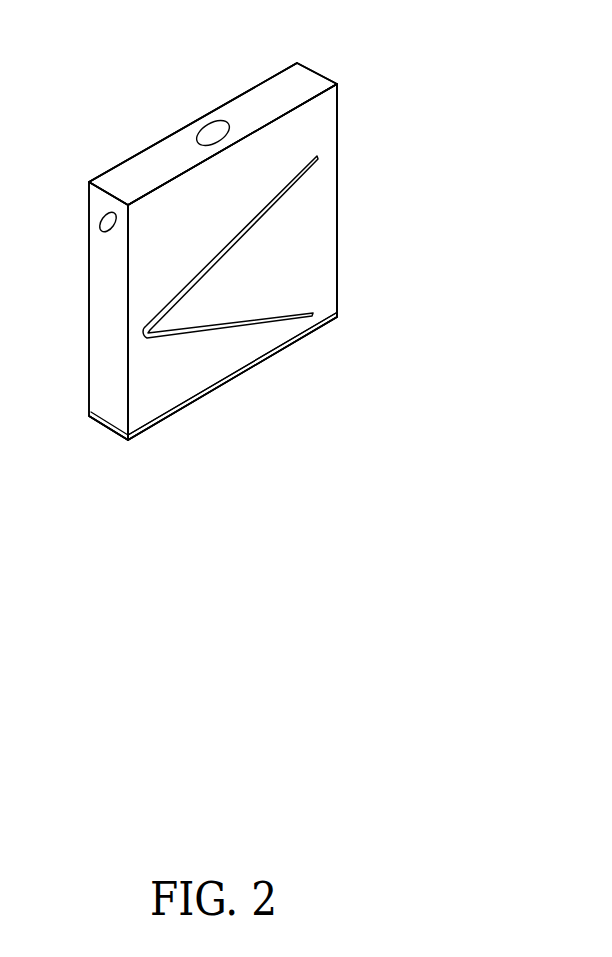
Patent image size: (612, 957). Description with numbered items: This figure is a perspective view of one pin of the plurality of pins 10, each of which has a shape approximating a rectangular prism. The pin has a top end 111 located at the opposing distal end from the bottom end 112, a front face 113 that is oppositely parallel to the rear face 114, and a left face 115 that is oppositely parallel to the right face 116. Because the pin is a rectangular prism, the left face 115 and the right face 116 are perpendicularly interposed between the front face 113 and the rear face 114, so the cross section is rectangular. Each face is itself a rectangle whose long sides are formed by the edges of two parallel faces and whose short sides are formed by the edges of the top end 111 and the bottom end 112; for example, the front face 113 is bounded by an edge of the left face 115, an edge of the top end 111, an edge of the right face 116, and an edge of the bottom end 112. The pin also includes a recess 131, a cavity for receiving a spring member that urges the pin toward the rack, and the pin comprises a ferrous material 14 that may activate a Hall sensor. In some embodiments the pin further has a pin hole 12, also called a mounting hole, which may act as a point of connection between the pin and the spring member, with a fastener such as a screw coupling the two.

The plurality of pins 10 is at (466, 243).
The top end 111 is at (303, 77).
The bottom end 112 is at (222, 388).
The front face 113 is at (328, 217).
The rear face 114 is at (96, 156).
The left face 115 is at (349, 293).
The right face 116 is at (102, 290).
The pin hole 12 is at (106, 228).
The recess 131 is at (211, 130).
The ferrous material 14 is at (100, 405).